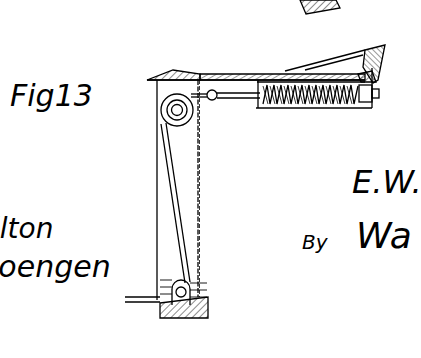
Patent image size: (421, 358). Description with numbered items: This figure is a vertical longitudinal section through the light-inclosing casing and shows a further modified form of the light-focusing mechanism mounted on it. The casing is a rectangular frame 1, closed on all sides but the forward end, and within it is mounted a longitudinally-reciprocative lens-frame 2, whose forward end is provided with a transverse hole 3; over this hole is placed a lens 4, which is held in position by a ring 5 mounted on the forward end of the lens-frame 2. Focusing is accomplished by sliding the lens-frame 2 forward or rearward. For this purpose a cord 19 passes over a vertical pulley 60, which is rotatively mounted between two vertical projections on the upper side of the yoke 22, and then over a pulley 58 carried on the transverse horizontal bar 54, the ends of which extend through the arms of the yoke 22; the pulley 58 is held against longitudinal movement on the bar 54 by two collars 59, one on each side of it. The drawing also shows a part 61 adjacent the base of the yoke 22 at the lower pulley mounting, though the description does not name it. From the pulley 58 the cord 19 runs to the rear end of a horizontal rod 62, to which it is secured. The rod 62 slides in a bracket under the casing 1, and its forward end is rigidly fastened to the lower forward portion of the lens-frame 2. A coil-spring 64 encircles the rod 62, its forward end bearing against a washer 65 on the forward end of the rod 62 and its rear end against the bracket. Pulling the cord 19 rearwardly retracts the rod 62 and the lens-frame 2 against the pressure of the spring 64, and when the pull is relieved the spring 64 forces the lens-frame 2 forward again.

The rectangular frame 1 is at (224, 75).
The lens-frame 2 is at (342, 59).
The transverse hole 3 is at (364, 54).
The lens 4 is at (382, 56).
The ring 5 is at (378, 78).
The cord 19 is at (165, 188).
The yoke 22 is at (158, 222).
The horizontal bar 54 is at (161, 102).
The pulley 58 is at (167, 108).
The collars 59 is at (162, 125).
The vertical pulley 60 is at (177, 280).
The base block 61 is at (197, 301).
The horizontal rod 62 is at (247, 100).
The coil-spring 64 is at (319, 105).
The washer 65 is at (362, 103).